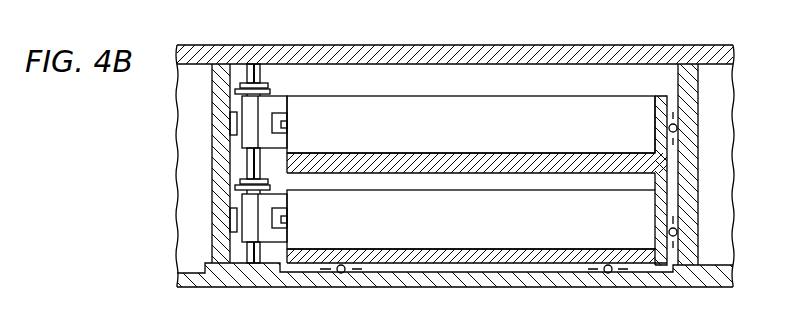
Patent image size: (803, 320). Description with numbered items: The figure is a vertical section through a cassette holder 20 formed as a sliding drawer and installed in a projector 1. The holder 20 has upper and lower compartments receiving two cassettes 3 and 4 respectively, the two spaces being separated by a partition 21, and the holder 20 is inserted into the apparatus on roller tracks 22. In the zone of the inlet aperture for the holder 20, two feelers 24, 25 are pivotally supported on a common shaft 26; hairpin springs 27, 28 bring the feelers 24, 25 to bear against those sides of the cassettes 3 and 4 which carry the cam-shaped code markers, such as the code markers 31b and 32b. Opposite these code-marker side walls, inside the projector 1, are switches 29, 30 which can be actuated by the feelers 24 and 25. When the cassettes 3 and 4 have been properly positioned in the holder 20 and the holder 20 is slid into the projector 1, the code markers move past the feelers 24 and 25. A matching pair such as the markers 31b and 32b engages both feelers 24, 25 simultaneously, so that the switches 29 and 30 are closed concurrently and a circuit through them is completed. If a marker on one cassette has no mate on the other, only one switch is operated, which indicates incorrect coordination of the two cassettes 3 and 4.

The projector 1 is at (696, 274).
The cassette 3 is at (486, 139).
The cassette 4 is at (486, 233).
The cassette holder 20 is at (525, 256).
The partition 21 is at (640, 164).
The roller tracks 22 is at (678, 127).
The feeler 24 is at (248, 107).
The feeler 25 is at (248, 205).
The common shaft 26 is at (253, 68).
The hairpin spring 27 is at (267, 88).
The hairpin spring 28 is at (248, 176).
The switch 29 is at (233, 122).
The switch 30 is at (233, 216).
The code marker 31b is at (280, 118).
The code marker 32b is at (280, 212).